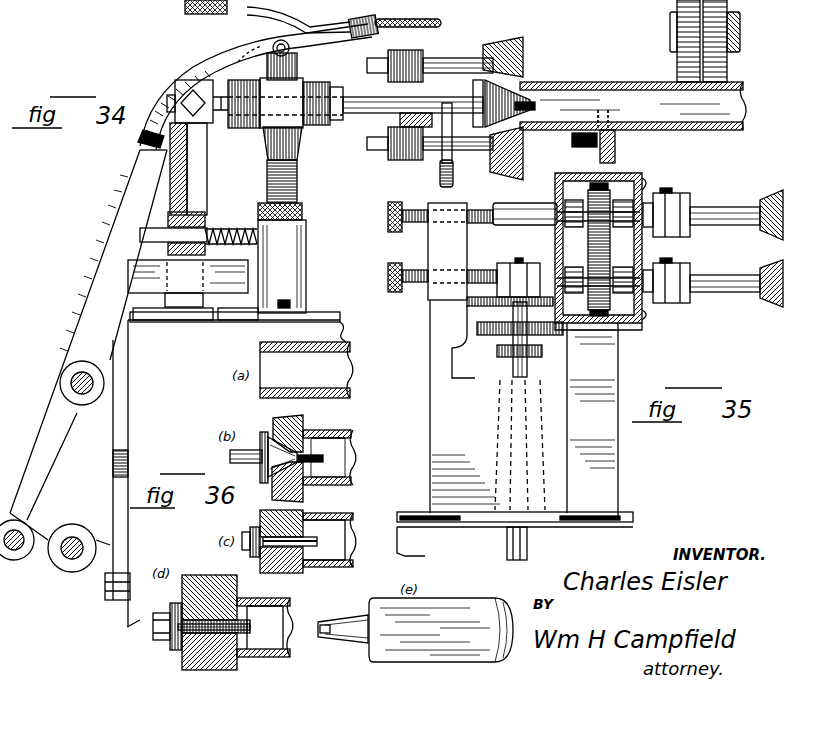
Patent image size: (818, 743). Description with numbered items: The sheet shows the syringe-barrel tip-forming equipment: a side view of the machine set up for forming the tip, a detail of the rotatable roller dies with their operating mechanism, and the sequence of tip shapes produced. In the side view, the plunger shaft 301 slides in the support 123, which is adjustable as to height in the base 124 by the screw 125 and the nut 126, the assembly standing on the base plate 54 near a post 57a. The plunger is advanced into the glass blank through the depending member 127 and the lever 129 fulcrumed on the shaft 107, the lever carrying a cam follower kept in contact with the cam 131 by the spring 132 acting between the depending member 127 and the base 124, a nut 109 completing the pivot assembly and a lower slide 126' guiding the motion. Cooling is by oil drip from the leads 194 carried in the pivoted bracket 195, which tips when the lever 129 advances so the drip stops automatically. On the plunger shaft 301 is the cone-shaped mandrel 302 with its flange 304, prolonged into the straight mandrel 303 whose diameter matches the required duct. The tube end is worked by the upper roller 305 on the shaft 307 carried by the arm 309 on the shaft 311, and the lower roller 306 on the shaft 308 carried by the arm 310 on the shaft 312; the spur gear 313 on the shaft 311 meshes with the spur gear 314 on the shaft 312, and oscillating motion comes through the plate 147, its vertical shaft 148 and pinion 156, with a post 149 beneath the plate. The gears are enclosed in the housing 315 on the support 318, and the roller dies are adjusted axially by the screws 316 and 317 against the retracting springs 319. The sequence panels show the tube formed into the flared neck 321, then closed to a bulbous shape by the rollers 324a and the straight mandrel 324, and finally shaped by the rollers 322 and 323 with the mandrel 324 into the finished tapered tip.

In FIG. 34, the base plate 54 is at (348, 338).
In FIG. 35, the base plate 54 is at (669, 549).
In FIG. 34, the support post 57a is at (617, 150).
In FIG. 34, the shaft 107 is at (60, 383).
In FIG. 34, the nut 109 is at (105, 586).
In FIG. 34, the support 123 is at (300, 128).
In FIG. 34, the base 124 is at (300, 278).
In FIG. 34, the screw 125 is at (293, 172).
In FIG. 34, the nut 126 is at (293, 210).
In FIG. 34, the slide block 126' is at (193, 290).
In FIG. 34, the depending member 127 is at (209, 166).
In FIG. 34, the lever 129 is at (118, 230).
In FIG. 34, the cam 131 is at (50, 525).
In FIG. 34, the spring 132 is at (250, 226).
In FIG. 35, the plate 147 is at (507, 310).
In FIG. 35, the vertical shaft 148 is at (553, 326).
In FIG. 35, the post 149 is at (527, 542).
In FIG. 35, the pinion 156 is at (556, 352).
In FIG. 34, the leads 194 is at (438, 19).
In FIG. 34, the bracket 195 is at (224, 58).
In FIG. 34, the plunger shaft 301 is at (375, 95).
In FIG. 36, the plunger shaft 301 is at (232, 453).
In FIG. 34, the cone-shaped mandrel 302 is at (484, 84).
In FIG. 36, the cone-shaped mandrel 302 is at (268, 437).
In FIG. 34, the straight mandrel 303 is at (560, 72).
In FIG. 36, the straight mandrel 303 is at (319, 451).
In FIG. 36, the flange 304 is at (262, 432).
In FIG. 34, the upper roller 305 is at (514, 55).
In FIG. 35, the upper roller 305 is at (790, 189).
In FIG. 36, the upper roller 305 is at (295, 416).
In FIG. 34, the lower roller 306 is at (517, 154).
In FIG. 35, the lower roller 306 is at (782, 308).
In FIG. 36, the lower roller 306 is at (303, 490).
In FIG. 34, the shaft 307 is at (445, 56).
In FIG. 35, the shaft 307 is at (742, 207).
In FIG. 34, the shaft 308 is at (470, 152).
In FIG. 35, the shaft 308 is at (744, 277).
In FIG. 34, the arm 309 is at (427, 49).
In FIG. 35, the arm 309 is at (710, 186).
In FIG. 34, the arm 310 is at (420, 160).
In FIG. 35, the arm 310 is at (682, 303).
In FIG. 35, the shaft 311 is at (544, 207).
In FIG. 35, the shaft 312 is at (512, 270).
In FIG. 35, the spur gear 313 is at (622, 174).
In FIG. 35, the spur gear 314 is at (628, 329).
In FIG. 35, the housing 315 is at (586, 175).
In FIG. 34, the screw 316 is at (218, 33).
In FIG. 35, the screw 316 is at (388, 220).
In FIG. 35, the screw 317 is at (388, 281).
In FIG. 35, the support 318 is at (618, 452).
In FIG. 35, the retracting springs 319 is at (642, 316).
In FIG. 36, the flared neck 321 is at (310, 430).
In FIG. 36, the roller 322 is at (228, 574).
In FIG. 36, the roller 323 is at (182, 657).
In FIG. 36, the straight mandrel 324 is at (259, 556).
In FIG. 36, the roller 324a is at (260, 512).